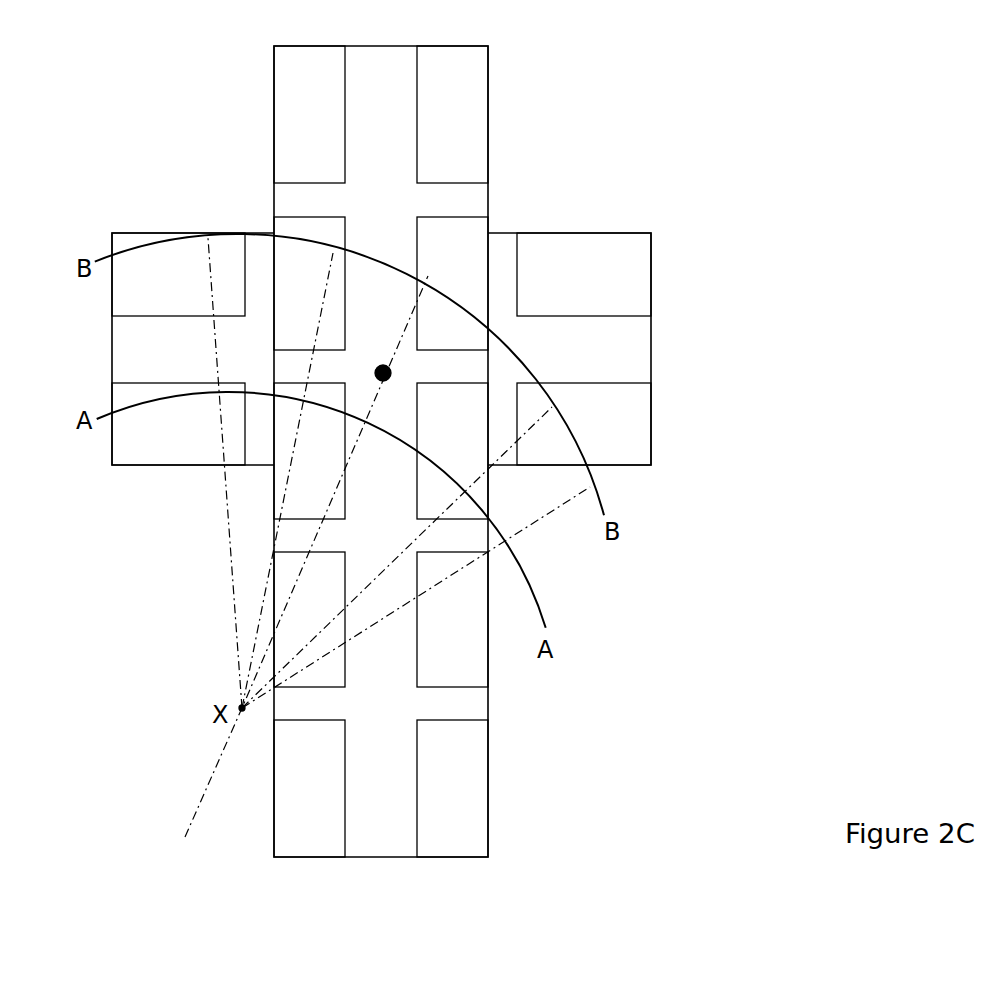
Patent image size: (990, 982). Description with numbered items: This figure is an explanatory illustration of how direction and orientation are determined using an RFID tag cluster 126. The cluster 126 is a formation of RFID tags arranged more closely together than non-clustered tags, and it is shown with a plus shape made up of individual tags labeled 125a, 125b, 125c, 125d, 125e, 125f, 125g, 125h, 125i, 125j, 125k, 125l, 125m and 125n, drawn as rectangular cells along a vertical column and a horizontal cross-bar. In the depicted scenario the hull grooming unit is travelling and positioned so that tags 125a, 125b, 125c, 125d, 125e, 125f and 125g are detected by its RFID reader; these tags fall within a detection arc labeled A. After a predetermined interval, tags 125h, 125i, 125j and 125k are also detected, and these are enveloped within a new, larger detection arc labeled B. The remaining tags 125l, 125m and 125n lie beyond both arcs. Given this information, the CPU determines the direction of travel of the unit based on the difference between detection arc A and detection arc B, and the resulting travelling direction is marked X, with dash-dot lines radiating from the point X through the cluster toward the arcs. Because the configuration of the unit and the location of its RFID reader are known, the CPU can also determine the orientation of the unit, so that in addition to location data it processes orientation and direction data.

The tag cluster 126 is at (154, 169).
The RFID tag 125a is at (309, 788).
The RFID tag 125b is at (452, 788).
The RFID tag 125c is at (309, 619).
The RFID tag 125d is at (452, 619).
The RFID tag 125e is at (309, 451).
The RFID tag 125f is at (452, 451).
The RFID tag 125g is at (178, 424).
The RFID tag 125h is at (584, 424).
The RFID tag 125i is at (178, 274).
The RFID tag 125j is at (309, 283).
The RFID tag 125k is at (452, 283).
The RFID tag 125l is at (584, 274).
The RFID tag 125m is at (309, 114).
The RFID tag 125n is at (452, 114).